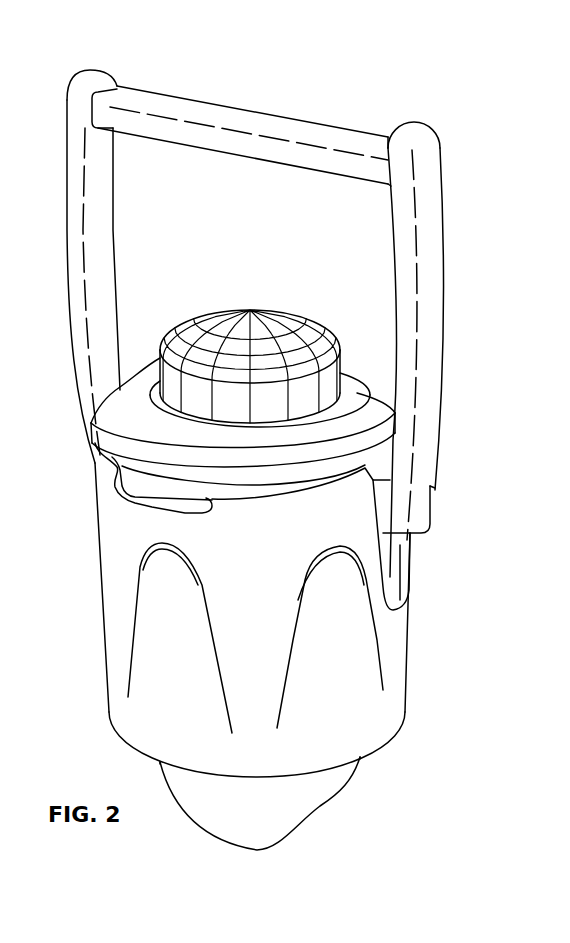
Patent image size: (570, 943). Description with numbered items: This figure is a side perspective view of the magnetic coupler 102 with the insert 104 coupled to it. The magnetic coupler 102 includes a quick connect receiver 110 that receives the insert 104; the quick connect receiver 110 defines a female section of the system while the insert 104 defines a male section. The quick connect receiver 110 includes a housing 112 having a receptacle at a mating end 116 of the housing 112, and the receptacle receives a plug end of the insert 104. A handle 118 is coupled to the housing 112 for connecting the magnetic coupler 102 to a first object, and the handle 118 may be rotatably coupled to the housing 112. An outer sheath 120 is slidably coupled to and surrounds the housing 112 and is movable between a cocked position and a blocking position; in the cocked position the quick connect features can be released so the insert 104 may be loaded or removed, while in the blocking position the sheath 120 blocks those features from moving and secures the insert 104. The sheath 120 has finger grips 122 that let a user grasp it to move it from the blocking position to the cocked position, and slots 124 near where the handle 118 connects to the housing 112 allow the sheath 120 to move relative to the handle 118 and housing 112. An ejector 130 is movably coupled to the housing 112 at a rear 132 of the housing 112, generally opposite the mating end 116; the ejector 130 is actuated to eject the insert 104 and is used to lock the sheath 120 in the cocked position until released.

The magnetic coupler 102 is at (484, 196).
The insert 104 is at (355, 819).
The quick connect receiver 110 is at (428, 656).
The housing 112 is at (377, 460).
The mating end 116 is at (358, 755).
The handle 118 is at (440, 297).
The outer sheath 120 is at (385, 702).
The finger grips 122 is at (136, 512).
The slots 124 is at (416, 550).
The ejector 130 is at (256, 320).
The rear 132 is at (372, 378).